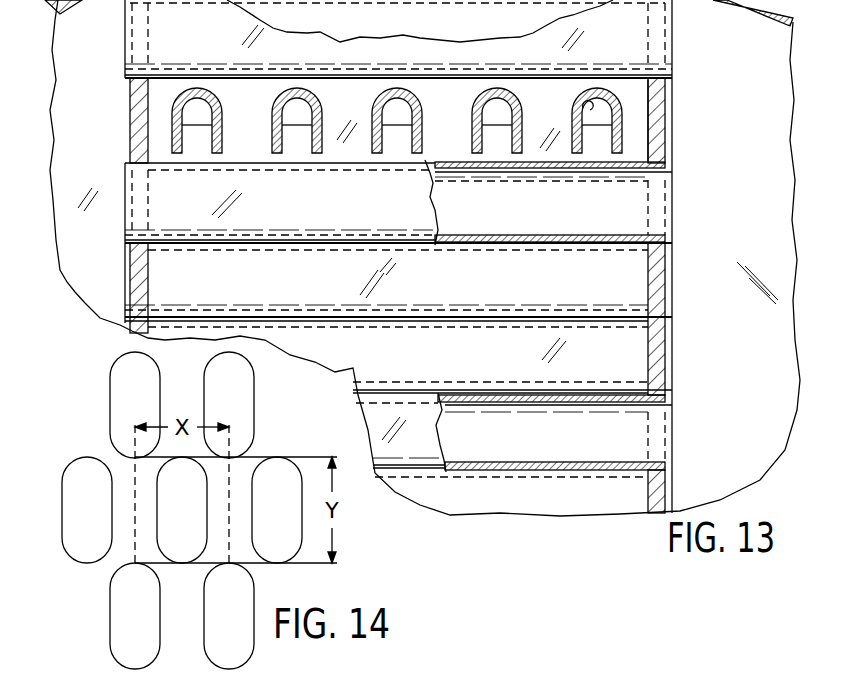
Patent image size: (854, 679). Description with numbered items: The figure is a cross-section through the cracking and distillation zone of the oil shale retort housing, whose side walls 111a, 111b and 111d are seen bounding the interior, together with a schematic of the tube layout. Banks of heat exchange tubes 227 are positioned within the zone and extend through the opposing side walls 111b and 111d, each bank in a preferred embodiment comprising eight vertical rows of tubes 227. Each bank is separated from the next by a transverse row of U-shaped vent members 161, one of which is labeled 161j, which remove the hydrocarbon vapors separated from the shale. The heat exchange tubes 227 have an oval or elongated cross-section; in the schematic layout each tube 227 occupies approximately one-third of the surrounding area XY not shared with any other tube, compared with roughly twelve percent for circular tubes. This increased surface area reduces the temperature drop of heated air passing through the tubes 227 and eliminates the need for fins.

The side wall 111a is at (632, 102).
The side wall 111b is at (663, 120).
The side wall 111d is at (140, 117).
The U-shaped vent member 161 is at (273, 124).
The hooked arch-shaped guide element 161j is at (588, 101).
The heat exchange tube 227 is at (143, 42).